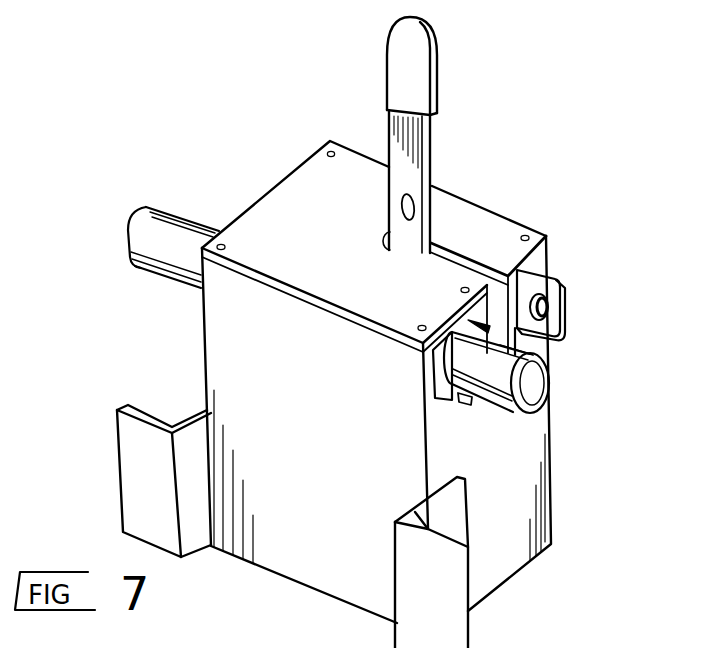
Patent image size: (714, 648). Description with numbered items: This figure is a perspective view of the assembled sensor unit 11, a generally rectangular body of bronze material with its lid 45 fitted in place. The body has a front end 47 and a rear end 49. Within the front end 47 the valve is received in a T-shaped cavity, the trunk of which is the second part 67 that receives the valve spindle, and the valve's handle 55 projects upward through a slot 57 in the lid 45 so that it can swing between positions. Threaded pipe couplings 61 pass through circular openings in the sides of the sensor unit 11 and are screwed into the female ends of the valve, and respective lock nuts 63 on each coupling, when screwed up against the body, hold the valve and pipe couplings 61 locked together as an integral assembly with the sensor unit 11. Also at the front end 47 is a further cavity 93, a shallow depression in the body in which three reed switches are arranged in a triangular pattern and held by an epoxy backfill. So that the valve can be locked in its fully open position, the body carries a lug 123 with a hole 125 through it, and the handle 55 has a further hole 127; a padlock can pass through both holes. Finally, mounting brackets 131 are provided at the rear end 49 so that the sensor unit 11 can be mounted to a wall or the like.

The sensor unit 11 is at (228, 327).
The lid 45 is at (324, 204).
The front end 47 is at (549, 249).
The rear end 49 is at (556, 512).
The handle 55 is at (412, 152).
The slot 57 is at (463, 247).
The threaded pipe couplings 61 is at (165, 232).
The lock nuts 63 is at (463, 396).
The second part 67 is at (220, 647).
The further cavity 93 is at (362, 646).
The lug 123 is at (550, 274).
The hole 125 is at (546, 312).
The further hole 127 is at (392, 173).
The mounting brackets 131 is at (135, 455).